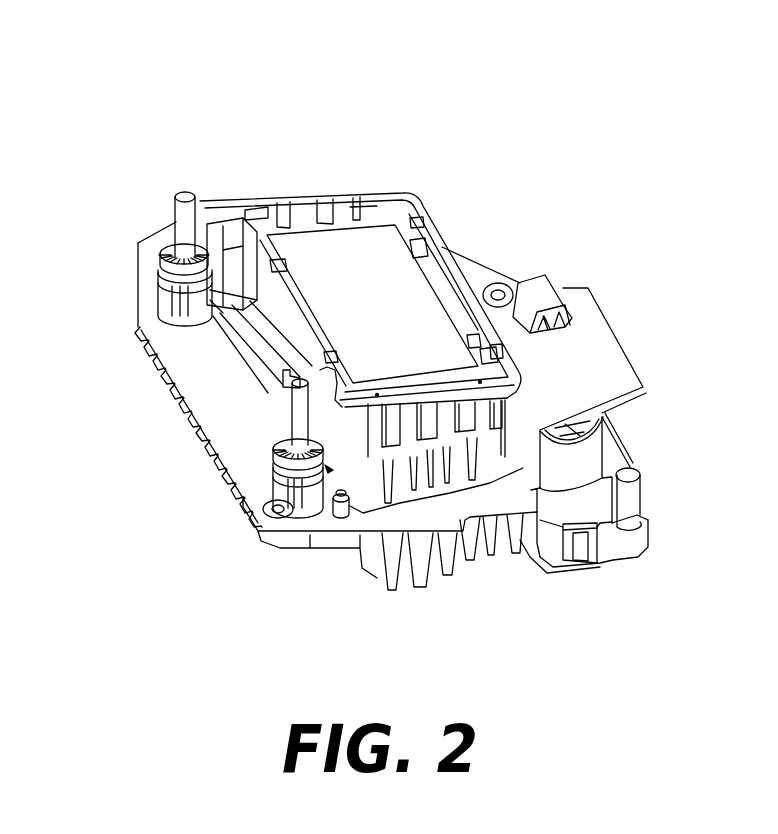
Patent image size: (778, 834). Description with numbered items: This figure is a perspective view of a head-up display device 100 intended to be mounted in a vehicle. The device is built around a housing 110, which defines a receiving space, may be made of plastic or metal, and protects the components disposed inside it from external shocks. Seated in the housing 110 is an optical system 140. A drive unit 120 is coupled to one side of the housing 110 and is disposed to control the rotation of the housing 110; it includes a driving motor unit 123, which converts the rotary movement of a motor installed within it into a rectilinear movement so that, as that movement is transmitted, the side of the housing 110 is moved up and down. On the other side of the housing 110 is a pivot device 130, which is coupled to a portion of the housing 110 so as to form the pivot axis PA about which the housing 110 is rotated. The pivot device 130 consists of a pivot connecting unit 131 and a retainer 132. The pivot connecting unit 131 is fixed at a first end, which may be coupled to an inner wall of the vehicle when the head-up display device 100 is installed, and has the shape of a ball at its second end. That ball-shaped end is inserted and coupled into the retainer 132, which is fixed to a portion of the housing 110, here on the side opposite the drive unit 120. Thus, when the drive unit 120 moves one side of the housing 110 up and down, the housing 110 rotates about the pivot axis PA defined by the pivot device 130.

The head-up display device 100 is at (117, 85).
The housing 110 is at (180, 423).
The drive unit 120 is at (637, 443).
The driving motor unit 123 is at (552, 547).
The pivot device 130 is at (156, 260).
The pivot connecting unit 131 is at (174, 213).
The retainer 132 is at (156, 281).
The optical system 140 is at (370, 249).
The pivot axis PA is at (203, 328).